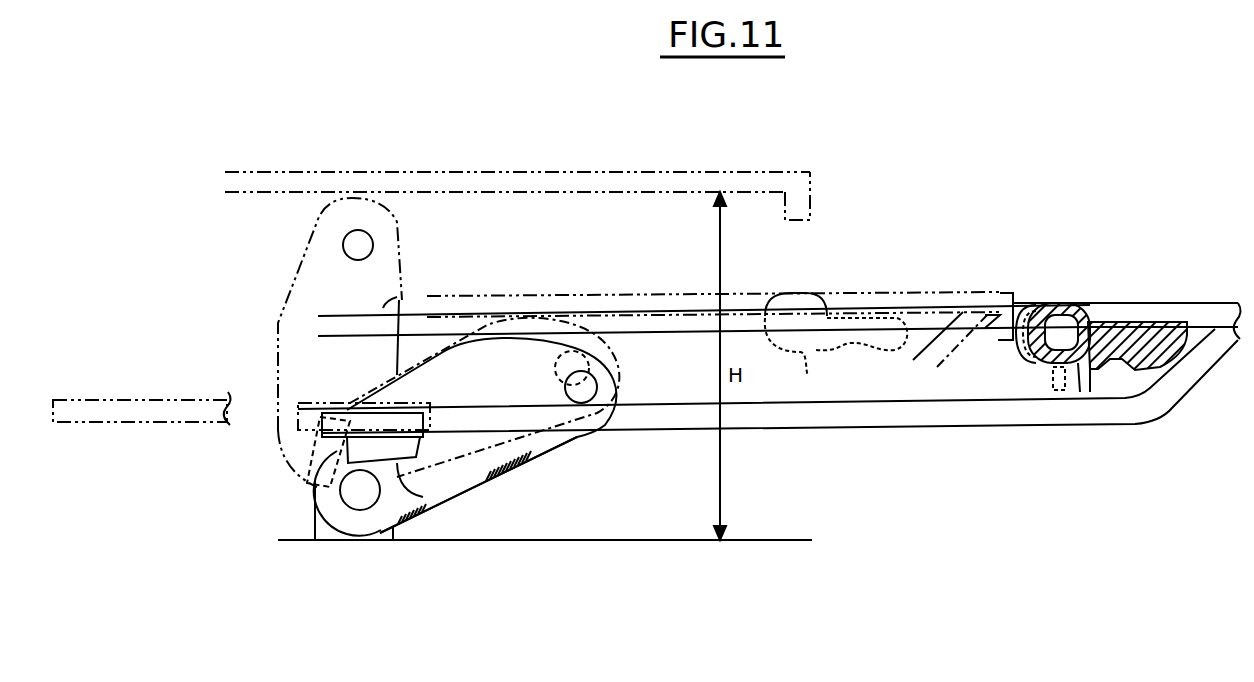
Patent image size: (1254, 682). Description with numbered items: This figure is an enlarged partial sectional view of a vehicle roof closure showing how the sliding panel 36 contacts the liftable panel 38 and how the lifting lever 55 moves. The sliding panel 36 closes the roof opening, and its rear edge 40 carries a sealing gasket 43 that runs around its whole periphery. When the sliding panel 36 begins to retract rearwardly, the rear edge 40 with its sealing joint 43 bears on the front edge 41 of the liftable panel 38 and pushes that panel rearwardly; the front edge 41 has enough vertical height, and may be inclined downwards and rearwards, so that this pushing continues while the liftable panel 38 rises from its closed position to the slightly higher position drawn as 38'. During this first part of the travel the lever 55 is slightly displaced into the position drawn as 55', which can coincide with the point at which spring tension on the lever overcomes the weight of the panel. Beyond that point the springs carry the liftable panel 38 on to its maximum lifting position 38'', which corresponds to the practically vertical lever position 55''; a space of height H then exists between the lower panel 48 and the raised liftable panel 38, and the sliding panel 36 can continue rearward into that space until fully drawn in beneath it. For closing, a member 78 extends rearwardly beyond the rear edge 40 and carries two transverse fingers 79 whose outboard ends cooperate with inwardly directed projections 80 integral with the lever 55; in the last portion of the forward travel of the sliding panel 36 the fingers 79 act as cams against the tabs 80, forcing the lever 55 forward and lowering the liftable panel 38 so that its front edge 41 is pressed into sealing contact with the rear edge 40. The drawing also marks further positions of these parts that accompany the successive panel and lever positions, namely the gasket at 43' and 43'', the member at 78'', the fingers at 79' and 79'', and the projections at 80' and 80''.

The sliding roof panel 36 is at (1201, 304).
The liftable panel 38 is at (713, 278).
The slightly higher position of liftable panel 38' is at (713, 284).
The maximum lifting position of liftable panel 38'' is at (517, 173).
The rear edge of sliding panel 40 is at (1088, 322).
The front edge of liftable panel 41 is at (1012, 305).
The sealing gasket 43 is at (1064, 303).
The roller bracket 43' is at (1036, 303).
The roller in intermediate position 43'' is at (836, 343).
The lower panel 48 is at (648, 537).
The lifting lever 55 is at (465, 439).
The slightly displaced position of lifting lever 55' is at (521, 397).
The practically vertical position of lifting lever 55'' is at (380, 342).
The member 78 is at (768, 397).
The support plate end in raised position 78'' is at (581, 389).
The transverse finger 79 is at (393, 405).
The stop member in intermediate position 79' is at (364, 399).
The stop member in raised position 79'' is at (140, 432).
The inwardly directed projection 80 is at (478, 485).
The rack block 80' is at (412, 456).
The rack in raised position 80'' is at (300, 462).